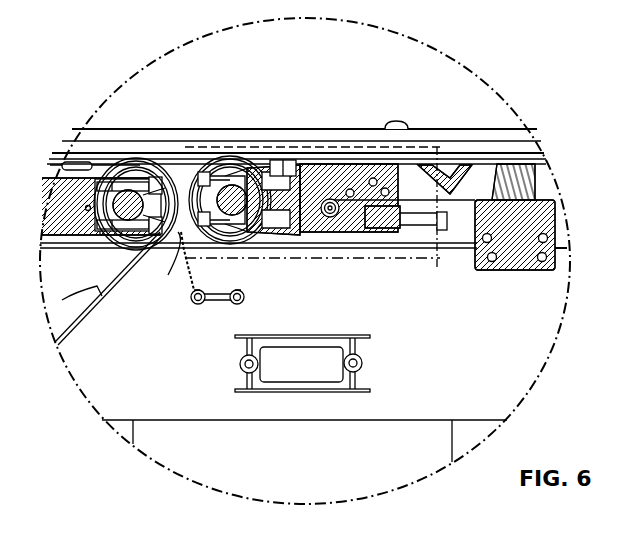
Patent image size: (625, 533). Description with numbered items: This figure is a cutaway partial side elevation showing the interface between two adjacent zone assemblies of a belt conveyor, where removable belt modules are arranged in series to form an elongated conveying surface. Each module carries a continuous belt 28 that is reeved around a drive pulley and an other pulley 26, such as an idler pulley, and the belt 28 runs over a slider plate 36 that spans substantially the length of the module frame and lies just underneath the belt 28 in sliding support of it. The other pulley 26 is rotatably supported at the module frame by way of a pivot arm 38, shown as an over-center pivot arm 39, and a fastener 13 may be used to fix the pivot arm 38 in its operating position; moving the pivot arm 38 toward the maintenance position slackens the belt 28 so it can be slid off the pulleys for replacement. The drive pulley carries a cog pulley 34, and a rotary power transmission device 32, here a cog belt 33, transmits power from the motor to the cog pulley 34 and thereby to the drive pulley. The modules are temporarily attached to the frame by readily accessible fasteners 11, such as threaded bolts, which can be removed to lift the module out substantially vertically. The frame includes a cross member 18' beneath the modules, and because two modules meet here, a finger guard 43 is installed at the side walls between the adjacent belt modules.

The fastener 11 is at (393, 120).
The fastener 13 is at (281, 170).
The cross member 18' is at (325, 355).
The other pulley 26 is at (257, 240).
The continuous belt 28 is at (60, 262).
The rotary power transmission device 32 is at (88, 308).
The cog belt 33 is at (97, 300).
The cog pulley 34 is at (97, 248).
The slider plate 36 is at (488, 163).
The pivot arm 38 is at (259, 228).
The over-center pivot arm 39 is at (262, 165).
The finger guard 43 is at (183, 262).